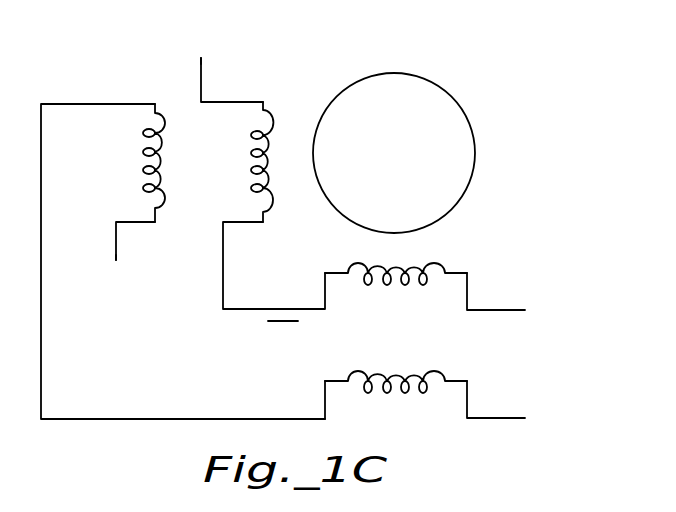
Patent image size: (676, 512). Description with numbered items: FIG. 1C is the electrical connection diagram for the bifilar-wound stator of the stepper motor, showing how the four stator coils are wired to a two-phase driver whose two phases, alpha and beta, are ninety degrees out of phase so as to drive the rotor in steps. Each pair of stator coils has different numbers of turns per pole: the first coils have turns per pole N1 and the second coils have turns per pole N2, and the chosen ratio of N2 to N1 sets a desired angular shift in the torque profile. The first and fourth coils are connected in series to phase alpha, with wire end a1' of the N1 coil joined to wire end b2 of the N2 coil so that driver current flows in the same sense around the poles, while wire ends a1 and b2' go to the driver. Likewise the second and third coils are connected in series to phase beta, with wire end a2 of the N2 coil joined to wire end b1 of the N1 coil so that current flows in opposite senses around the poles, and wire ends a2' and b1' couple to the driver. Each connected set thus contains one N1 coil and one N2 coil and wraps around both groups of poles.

The turns per pole of first coils N1 is at (341, 261).
The turns per pole of second coils N2 is at (287, 208).
The wire end of first coil a1 is at (263, 183).
The wire end of second coil a2 is at (135, 160).
The wire end of third coil b1 is at (549, 407).
The wire end of fourth coil b2 is at (549, 300).